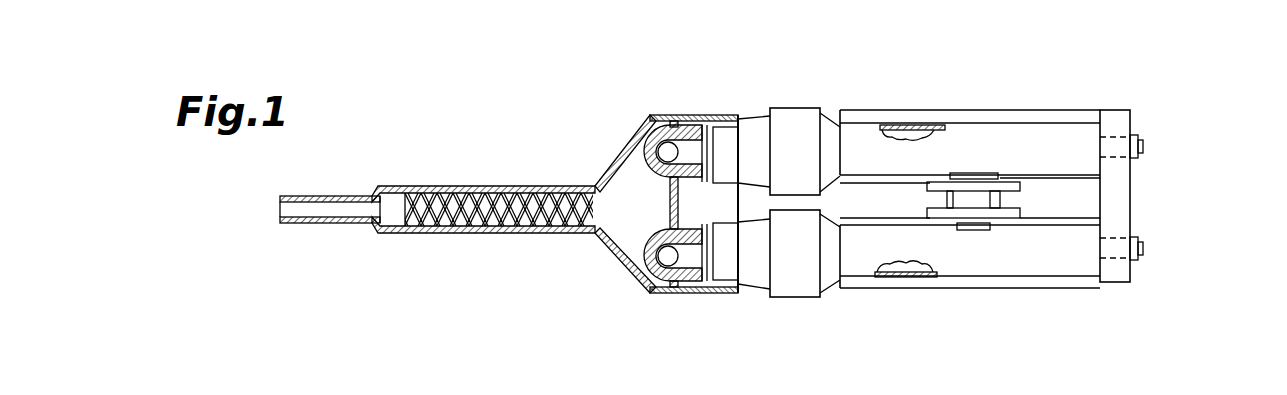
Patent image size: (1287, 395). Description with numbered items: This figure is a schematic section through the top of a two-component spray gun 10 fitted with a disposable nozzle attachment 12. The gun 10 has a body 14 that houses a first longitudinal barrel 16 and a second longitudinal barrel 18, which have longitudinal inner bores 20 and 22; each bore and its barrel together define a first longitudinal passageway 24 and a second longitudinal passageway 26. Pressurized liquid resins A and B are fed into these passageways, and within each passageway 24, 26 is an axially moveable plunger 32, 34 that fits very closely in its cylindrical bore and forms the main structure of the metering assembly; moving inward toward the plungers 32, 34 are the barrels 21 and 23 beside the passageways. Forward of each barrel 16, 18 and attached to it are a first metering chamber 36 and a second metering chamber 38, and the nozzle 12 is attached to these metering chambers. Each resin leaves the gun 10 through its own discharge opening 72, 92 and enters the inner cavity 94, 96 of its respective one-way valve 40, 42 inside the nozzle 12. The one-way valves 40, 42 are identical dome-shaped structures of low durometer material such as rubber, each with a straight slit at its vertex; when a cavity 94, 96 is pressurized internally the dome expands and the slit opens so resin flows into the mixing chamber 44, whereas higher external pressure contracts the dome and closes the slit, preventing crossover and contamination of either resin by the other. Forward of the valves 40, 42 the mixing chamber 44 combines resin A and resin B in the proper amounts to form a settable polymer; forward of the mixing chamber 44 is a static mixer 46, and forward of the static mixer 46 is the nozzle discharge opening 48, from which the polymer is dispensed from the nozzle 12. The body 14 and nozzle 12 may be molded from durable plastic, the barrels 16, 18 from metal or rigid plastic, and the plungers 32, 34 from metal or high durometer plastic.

The spray gun 10 is at (1134, 300).
The disposable nozzle attachment 12 is at (428, 257).
The body 14 is at (956, 112).
The first longitudinal barrel 16 is at (1006, 130).
The second longitudinal barrel 18 is at (1002, 268).
The inner bore of first barrel 20 is at (878, 139).
The barrel 21 is at (791, 112).
The inner bore of second barrel 22 is at (883, 277).
The barrel 23 is at (808, 297).
The first longitudinal passageway 24 is at (917, 128).
The second longitudinal passageway 26 is at (898, 275).
The first plunger 32 is at (1144, 142).
The second plunger 34 is at (1146, 243).
The first metering chamber 36 is at (753, 121).
The second metering chamber 38 is at (758, 284).
The first one-way valve 40 is at (650, 123).
The second one-way valve 42 is at (647, 288).
The mixing chamber 44 is at (612, 218).
The static mixer 46 is at (531, 232).
The nozzle discharge opening 48 is at (281, 208).
The first discharge opening 72 is at (681, 114).
The second discharge opening 92 is at (696, 293).
The inner cavity of first one-way valve 94 is at (633, 277).
The inner cavity of second one-way valve 96 is at (638, 130).